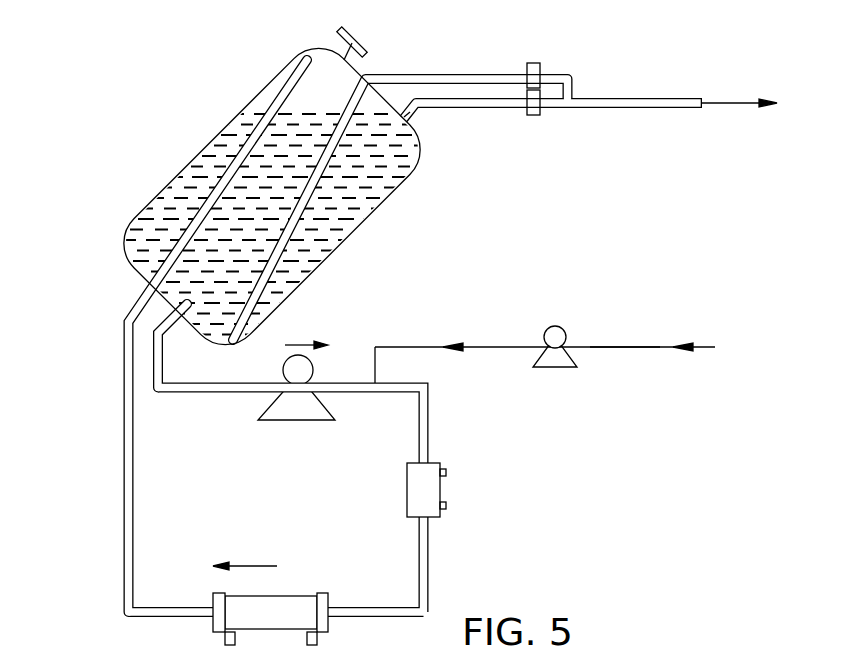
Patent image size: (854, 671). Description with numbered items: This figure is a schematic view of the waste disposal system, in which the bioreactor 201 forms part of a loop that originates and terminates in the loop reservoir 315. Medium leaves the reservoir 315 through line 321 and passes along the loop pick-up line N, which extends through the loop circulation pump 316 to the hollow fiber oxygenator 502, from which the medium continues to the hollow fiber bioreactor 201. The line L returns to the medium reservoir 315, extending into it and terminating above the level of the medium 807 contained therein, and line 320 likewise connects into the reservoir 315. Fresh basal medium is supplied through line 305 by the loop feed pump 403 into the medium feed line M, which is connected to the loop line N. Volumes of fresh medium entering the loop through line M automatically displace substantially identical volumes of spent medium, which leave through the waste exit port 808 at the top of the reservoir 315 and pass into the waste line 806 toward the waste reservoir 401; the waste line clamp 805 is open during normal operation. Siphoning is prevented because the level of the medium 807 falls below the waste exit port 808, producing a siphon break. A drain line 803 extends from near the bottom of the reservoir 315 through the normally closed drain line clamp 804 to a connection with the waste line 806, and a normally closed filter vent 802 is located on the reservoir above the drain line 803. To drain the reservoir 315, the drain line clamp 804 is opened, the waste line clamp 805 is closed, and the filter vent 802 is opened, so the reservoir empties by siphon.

The loop reservoir 315 is at (377, 208).
The line 320 is at (124, 354).
The line 321 is at (164, 367).
The loop circulation pump 316 is at (298, 420).
The line 305 is at (572, 358).
The loop feed pump 403 is at (555, 369).
The hollow fiber oxygenator 502 is at (440, 492).
The bioreactor 201 is at (287, 625).
The waste reservoir 401 is at (767, 101).
The filter vent 802 is at (338, 38).
The drain line 803 is at (470, 61).
The drain line clamp 804 is at (538, 63).
The waste line clamp 805 is at (536, 115).
The waste line 806 is at (477, 108).
The medium 807 is at (390, 172).
The waste exit port 808 is at (405, 117).
The line L is at (124, 592).
The medium feed line M is at (623, 347).
The loop pick-up line N is at (429, 420).